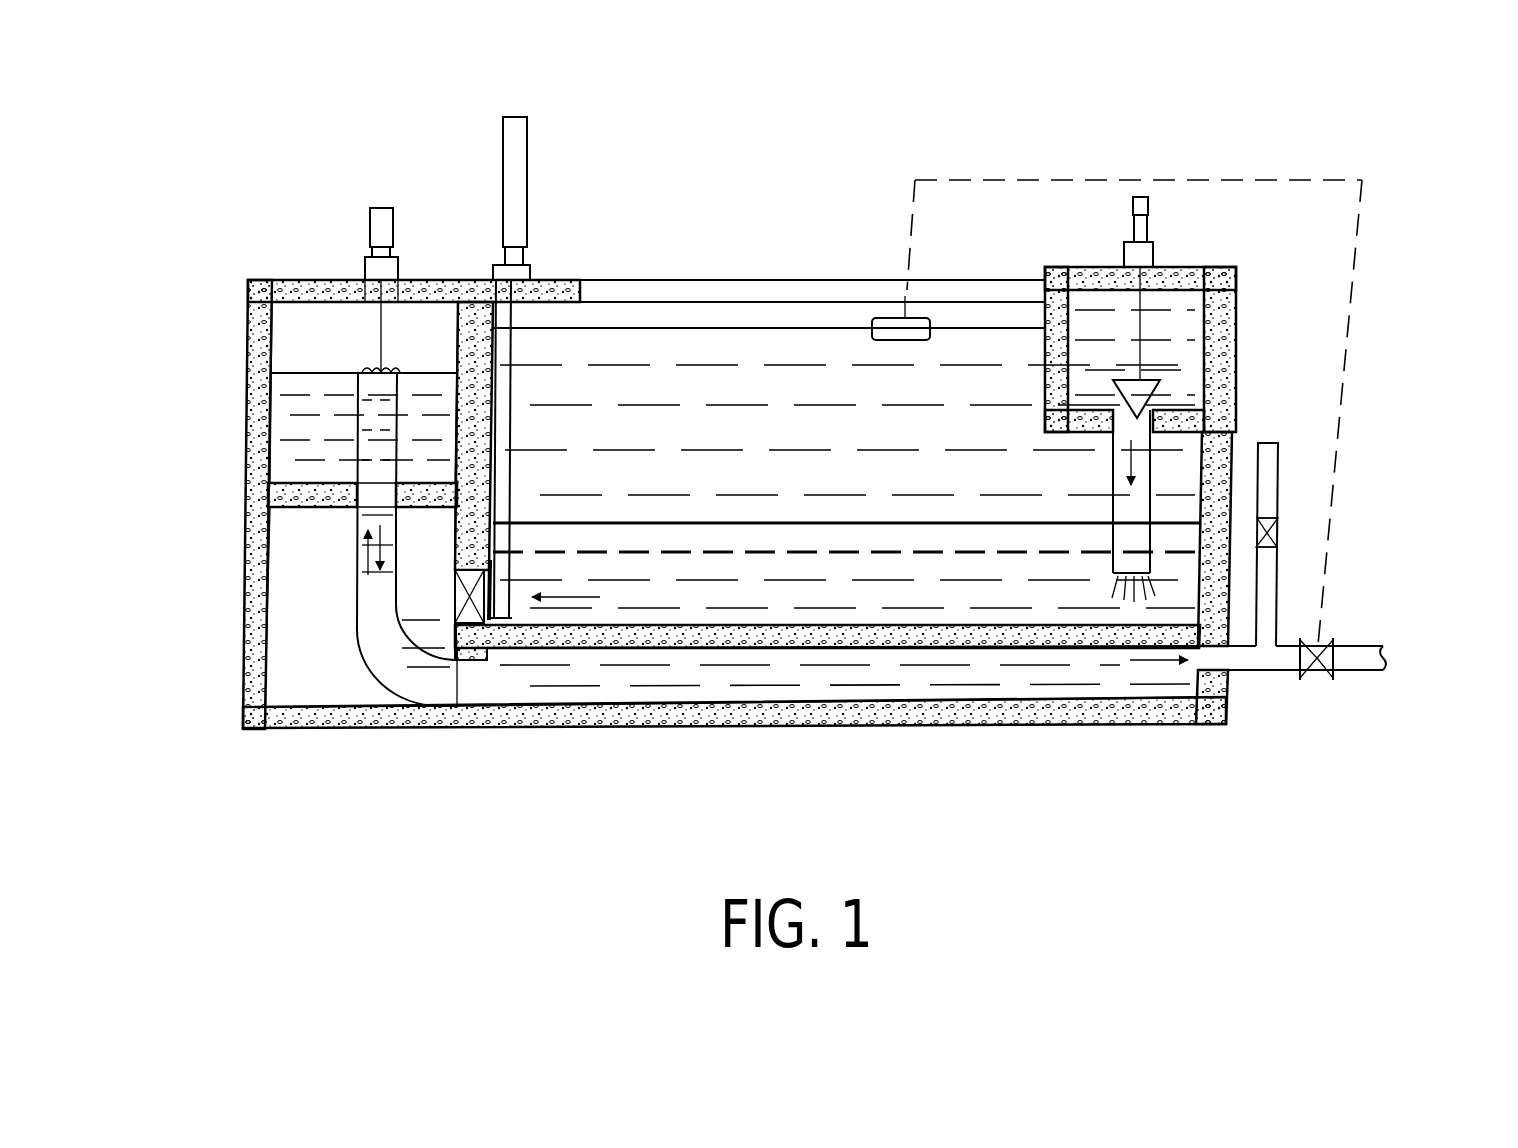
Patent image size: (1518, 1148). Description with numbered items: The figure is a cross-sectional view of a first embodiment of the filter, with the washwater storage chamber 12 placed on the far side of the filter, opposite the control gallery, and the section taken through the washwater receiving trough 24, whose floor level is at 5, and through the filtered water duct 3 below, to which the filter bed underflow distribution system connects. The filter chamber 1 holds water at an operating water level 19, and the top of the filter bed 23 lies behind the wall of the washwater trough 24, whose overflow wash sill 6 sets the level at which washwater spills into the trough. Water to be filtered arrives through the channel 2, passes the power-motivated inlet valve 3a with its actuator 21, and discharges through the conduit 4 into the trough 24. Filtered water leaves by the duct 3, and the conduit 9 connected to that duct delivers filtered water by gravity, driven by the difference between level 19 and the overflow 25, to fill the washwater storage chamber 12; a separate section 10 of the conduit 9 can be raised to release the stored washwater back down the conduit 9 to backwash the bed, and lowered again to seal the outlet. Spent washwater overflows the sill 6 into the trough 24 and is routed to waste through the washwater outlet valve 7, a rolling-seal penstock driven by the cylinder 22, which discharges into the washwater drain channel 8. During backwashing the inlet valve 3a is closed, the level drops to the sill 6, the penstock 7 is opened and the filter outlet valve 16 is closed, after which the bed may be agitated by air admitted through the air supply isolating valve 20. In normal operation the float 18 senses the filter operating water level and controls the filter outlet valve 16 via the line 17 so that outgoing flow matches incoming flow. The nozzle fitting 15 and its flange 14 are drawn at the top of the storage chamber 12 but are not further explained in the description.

The filter chamber 1 is at (363, 484).
The channel 2 is at (1165, 323).
The filtered water duct 3 is at (690, 683).
The inlet valve 3a is at (1158, 390).
The conduit 4 is at (1137, 520).
The floor level of washwater receiving trough 5 is at (976, 612).
The overflow wash sill 6 is at (920, 520).
The washwater outlet valve 7 is at (483, 613).
The washwater drain channel 8 is at (310, 671).
The conduit 9 is at (355, 580).
The separate section of conduit 10 is at (398, 455).
The washwater storage chamber 12 is at (310, 400).
The flange 14 is at (367, 250).
The nozzle 15 is at (388, 208).
The filter outlet valve 16 is at (1320, 643).
The line 17 is at (1362, 252).
The float 18 is at (916, 318).
The operating water level 19 is at (690, 328).
The air supply isolating valve 20 is at (1270, 530).
The power motivation of inlet valve 21 is at (1148, 218).
The cylinder 22 is at (527, 173).
The top of filter bed 23 is at (1043, 547).
The washwater receiving trough 24 is at (783, 590).
The overflow 25 is at (383, 395).